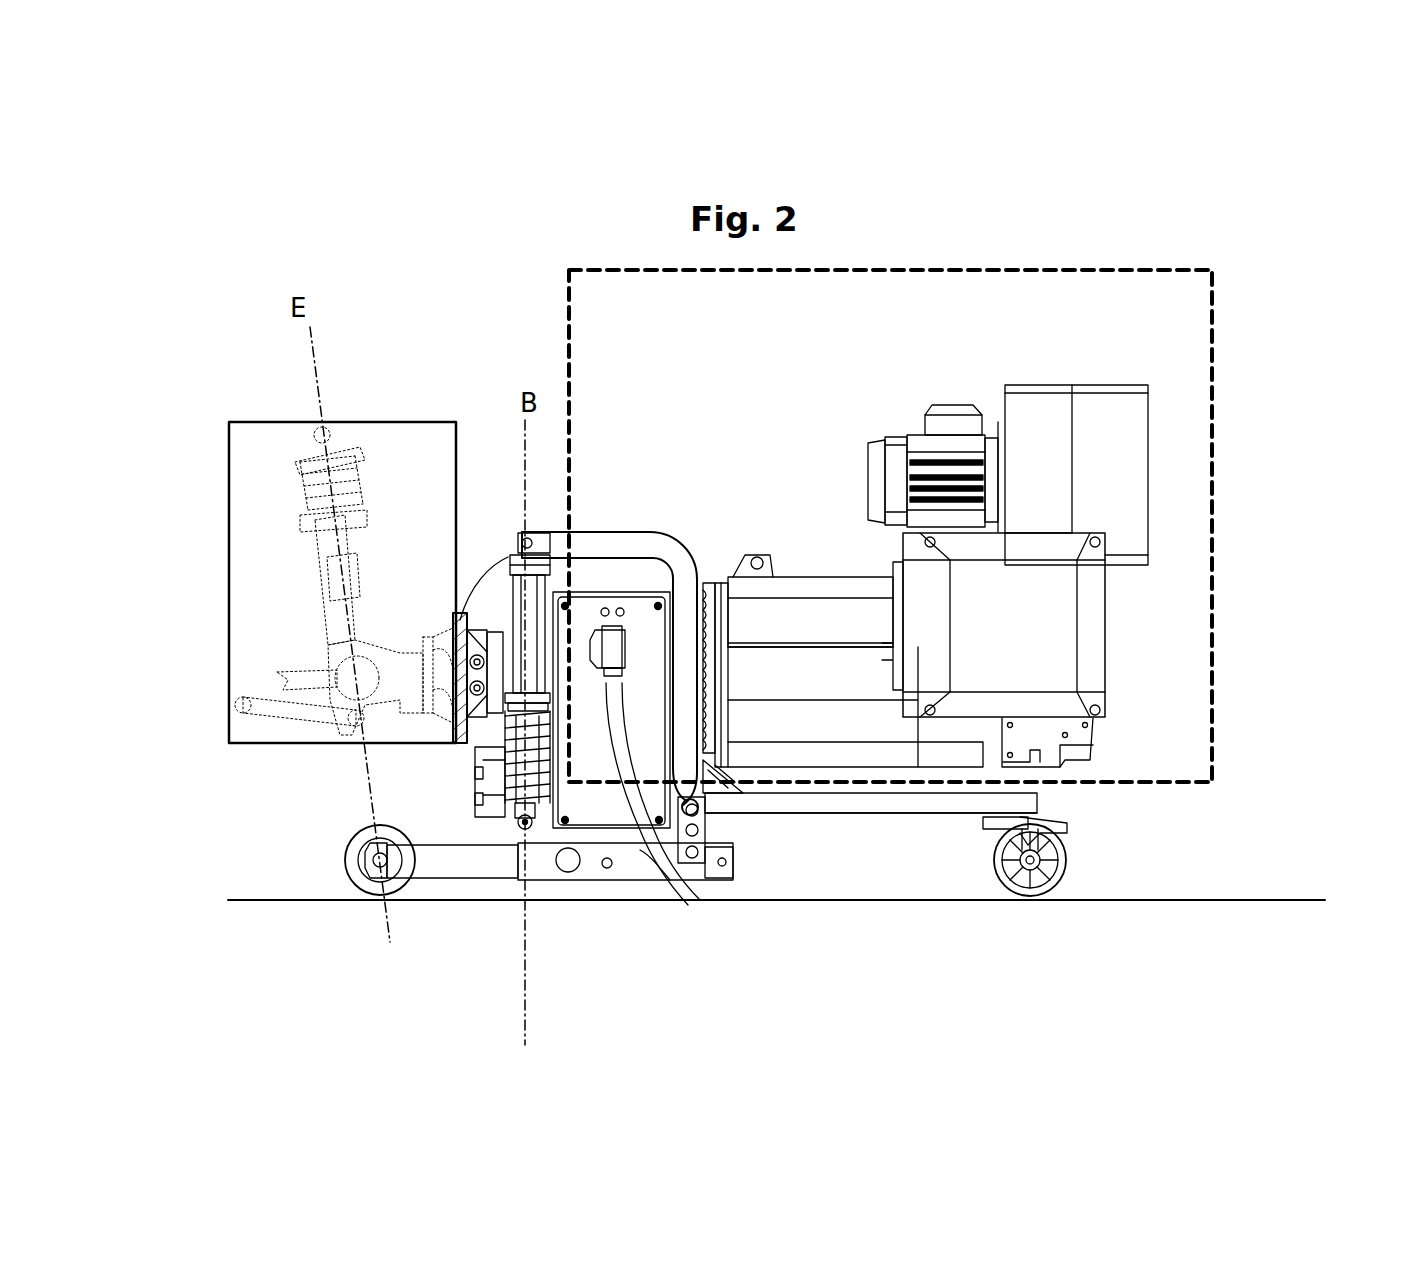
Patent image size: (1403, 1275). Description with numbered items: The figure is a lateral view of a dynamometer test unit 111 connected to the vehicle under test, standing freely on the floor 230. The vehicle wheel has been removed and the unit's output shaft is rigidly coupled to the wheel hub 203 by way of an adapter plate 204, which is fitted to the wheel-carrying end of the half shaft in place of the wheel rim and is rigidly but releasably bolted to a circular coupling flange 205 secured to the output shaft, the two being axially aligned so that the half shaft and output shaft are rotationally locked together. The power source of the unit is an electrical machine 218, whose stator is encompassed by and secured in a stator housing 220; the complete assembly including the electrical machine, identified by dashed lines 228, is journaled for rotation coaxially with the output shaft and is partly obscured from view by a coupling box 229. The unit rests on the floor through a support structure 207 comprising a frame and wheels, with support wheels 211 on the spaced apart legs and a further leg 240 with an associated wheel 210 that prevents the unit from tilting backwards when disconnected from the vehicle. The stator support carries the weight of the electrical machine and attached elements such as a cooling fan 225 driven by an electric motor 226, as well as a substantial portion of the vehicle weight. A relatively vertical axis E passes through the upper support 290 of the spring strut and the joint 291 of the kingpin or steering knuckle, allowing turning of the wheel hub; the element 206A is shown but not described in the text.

The upper support of the spring strut 290 is at (330, 427).
The adapter plate 204 is at (455, 625).
The coupling flange 205 is at (528, 552).
The stator housing 220 is at (802, 617).
The electrical machine 218 is at (830, 572).
The electric motor 226 is at (957, 438).
The cooling fan 225 is at (1101, 432).
The assembly identified by dashed lines 228 is at (1213, 572).
The joint of the kingpin/steering knuckle 291 is at (358, 718).
The wheel hub 203 is at (425, 722).
The support wheel 211 is at (345, 880).
The support arm 206A is at (487, 872).
The support structure 207 is at (603, 878).
The coupling box 229 is at (700, 807).
The further leg 240 is at (905, 808).
The dynamometer test unit 111 is at (857, 838).
The wheel 210 is at (1050, 875).
The floor 230 is at (1325, 903).